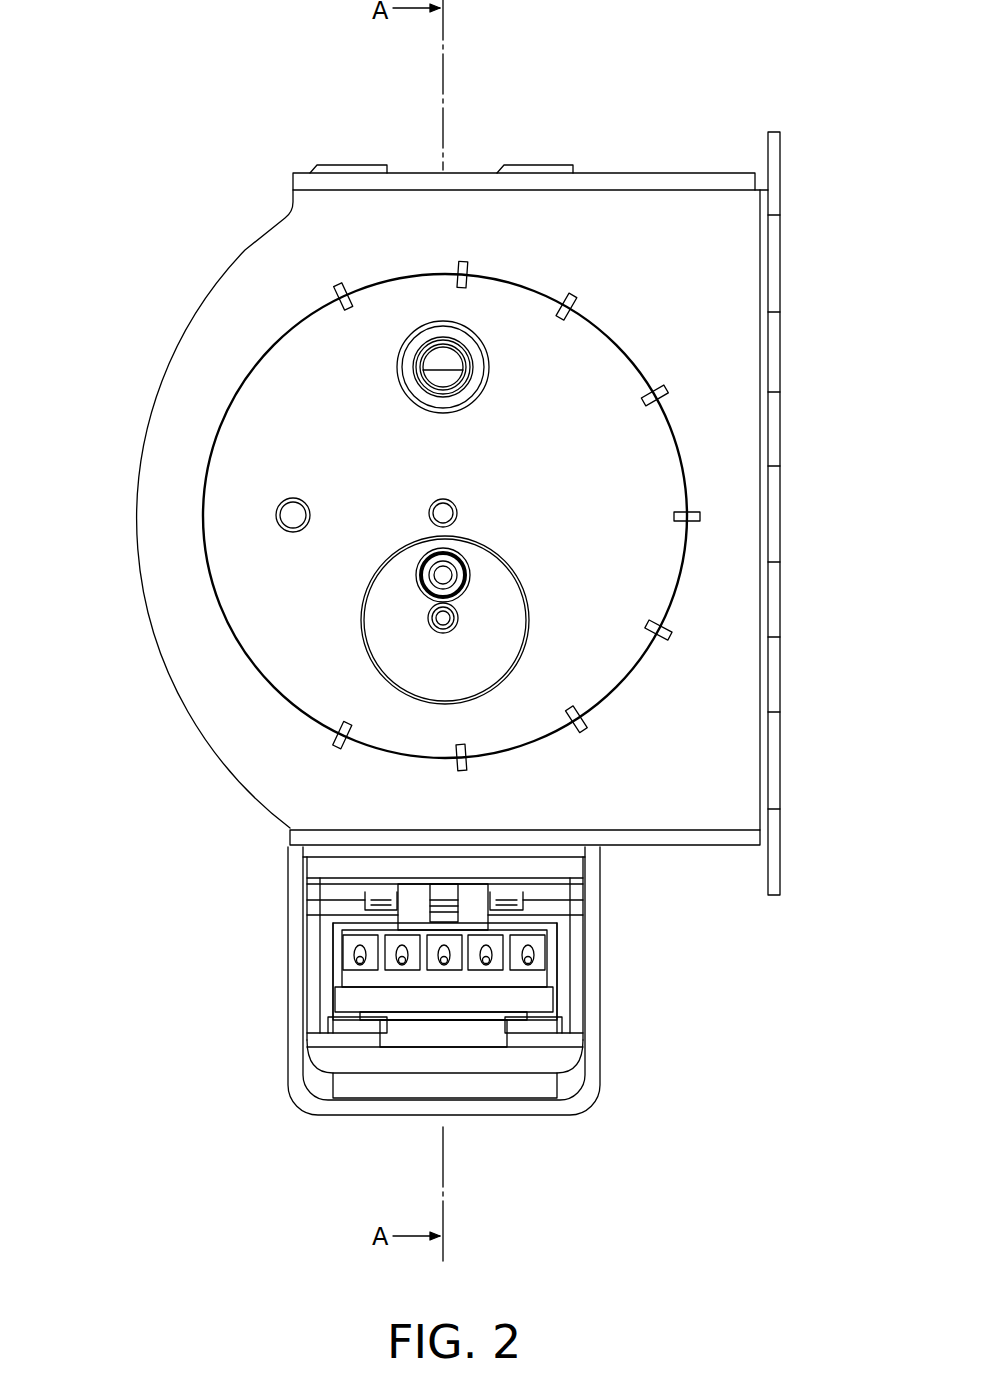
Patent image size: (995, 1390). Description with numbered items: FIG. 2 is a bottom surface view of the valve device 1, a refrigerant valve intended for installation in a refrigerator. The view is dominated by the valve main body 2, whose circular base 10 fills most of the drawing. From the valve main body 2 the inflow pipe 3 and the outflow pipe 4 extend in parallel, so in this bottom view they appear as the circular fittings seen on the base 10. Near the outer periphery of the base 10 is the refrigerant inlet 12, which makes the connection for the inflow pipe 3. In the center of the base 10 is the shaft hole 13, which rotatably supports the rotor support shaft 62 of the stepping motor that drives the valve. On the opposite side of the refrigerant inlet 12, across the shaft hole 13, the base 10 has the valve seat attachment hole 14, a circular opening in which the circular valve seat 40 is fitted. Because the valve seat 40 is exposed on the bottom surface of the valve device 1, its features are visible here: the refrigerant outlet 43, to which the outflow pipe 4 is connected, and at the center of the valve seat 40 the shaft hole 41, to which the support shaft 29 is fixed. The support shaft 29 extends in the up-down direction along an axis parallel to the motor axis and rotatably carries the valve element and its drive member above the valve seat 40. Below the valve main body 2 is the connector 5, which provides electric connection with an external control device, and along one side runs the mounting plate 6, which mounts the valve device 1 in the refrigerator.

The valve device 1 is at (118, 88).
The valve main body 2 is at (253, 240).
The inflow pipe 3 is at (423, 375).
The outflow pipe 4 is at (417, 568).
The connector 5 is at (600, 1005).
The mounting plate 6 is at (780, 163).
The base 10 is at (618, 349).
The refrigerant inlet 12 is at (273, 367).
The shaft hole 13 is at (247, 551).
The valve seat attachment hole 14 is at (309, 653).
The support shaft 29 is at (428, 617).
The valve seat 40 is at (362, 630).
The shaft hole 41 is at (296, 719).
The refrigerant outlet 43 is at (268, 621).
The rotor support shaft 62 is at (430, 512).